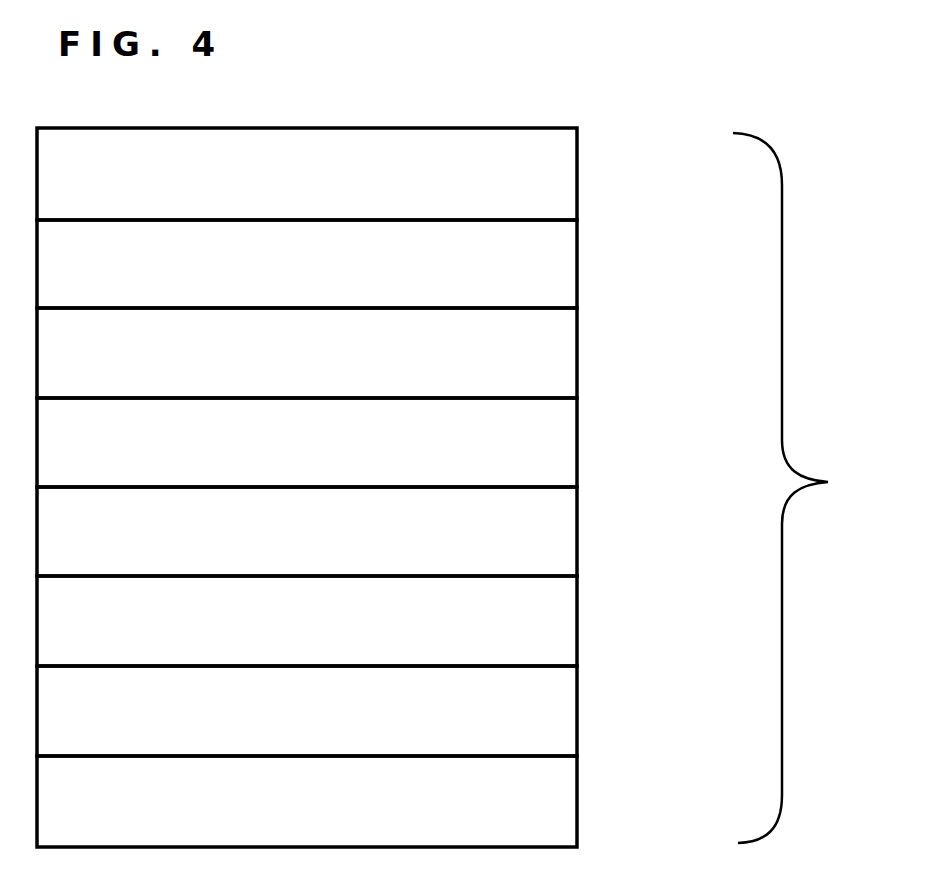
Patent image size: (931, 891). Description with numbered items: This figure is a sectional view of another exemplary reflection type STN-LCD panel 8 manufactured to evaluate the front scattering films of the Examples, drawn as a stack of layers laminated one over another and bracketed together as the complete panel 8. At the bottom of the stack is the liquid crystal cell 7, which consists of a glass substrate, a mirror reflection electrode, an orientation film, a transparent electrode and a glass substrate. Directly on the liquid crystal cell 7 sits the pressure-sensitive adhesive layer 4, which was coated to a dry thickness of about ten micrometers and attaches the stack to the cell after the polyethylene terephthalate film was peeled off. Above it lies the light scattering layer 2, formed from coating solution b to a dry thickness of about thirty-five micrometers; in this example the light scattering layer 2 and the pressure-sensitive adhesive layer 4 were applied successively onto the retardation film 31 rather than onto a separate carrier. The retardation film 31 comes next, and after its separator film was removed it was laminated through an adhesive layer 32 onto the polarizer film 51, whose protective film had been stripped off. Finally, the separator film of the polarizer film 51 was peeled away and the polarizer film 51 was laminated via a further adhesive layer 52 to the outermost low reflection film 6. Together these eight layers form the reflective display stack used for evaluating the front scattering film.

The low reflection film 6 is at (577, 175).
The adhesive layer 52 is at (577, 264).
The polarizer film 51 is at (577, 353).
The adhesive layer 32 is at (577, 442).
The retardation film 31 is at (577, 531).
The light scattering layer 2 is at (577, 621).
The pressure-sensitive adhesive layer 4 is at (577, 712).
The liquid crystal cell 7 is at (577, 802).
The reflection type STN-LCD panel 8 is at (802, 488).